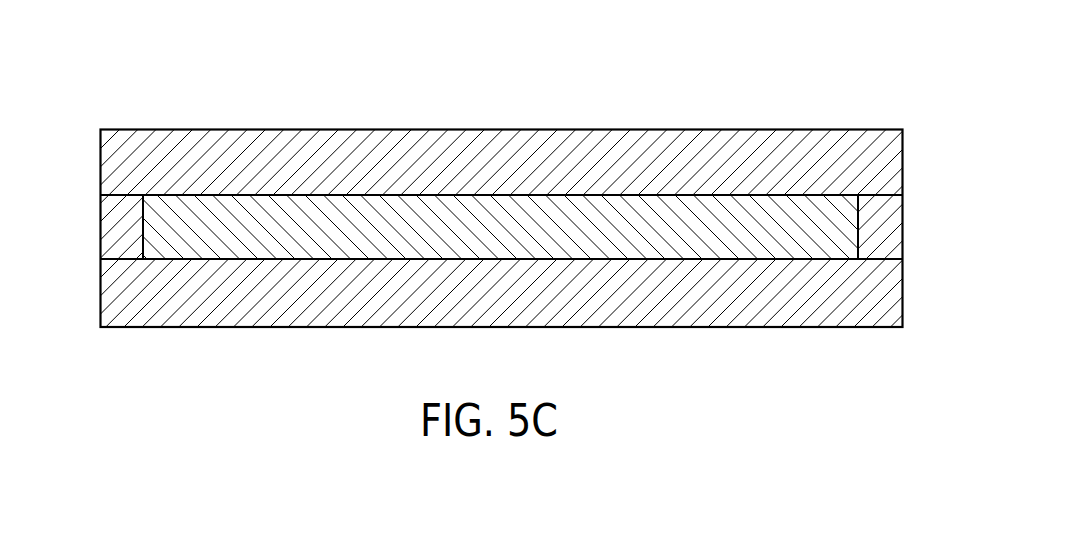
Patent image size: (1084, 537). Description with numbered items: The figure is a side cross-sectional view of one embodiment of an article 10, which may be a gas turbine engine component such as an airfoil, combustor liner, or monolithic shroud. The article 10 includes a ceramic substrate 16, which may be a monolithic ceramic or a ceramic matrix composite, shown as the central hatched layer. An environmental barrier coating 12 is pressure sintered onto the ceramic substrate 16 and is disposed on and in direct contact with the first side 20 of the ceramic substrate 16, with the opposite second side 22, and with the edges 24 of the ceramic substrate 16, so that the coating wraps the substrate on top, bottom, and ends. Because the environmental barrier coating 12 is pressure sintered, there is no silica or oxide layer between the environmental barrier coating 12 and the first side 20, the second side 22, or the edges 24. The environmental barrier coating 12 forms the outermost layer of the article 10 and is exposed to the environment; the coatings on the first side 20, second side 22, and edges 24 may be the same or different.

The article 10 is at (882, 103).
The environmental barrier coating 12 is at (100, 248).
The ceramic substrate 16 is at (847, 242).
The first side 20 is at (115, 194).
The second side 22 is at (155, 261).
The edges 24 is at (142, 235).